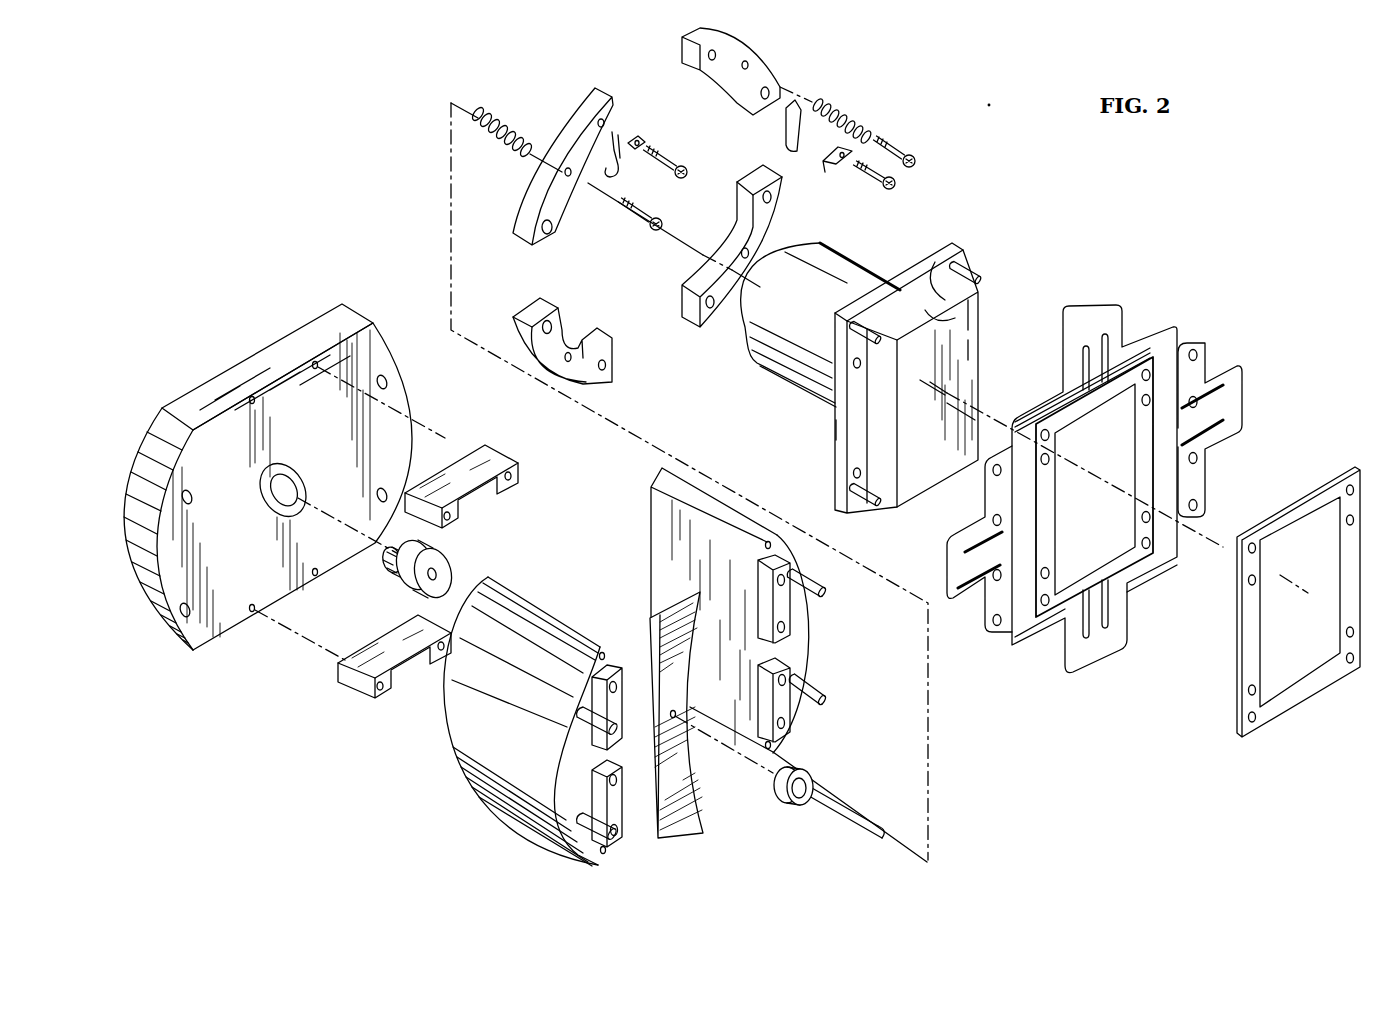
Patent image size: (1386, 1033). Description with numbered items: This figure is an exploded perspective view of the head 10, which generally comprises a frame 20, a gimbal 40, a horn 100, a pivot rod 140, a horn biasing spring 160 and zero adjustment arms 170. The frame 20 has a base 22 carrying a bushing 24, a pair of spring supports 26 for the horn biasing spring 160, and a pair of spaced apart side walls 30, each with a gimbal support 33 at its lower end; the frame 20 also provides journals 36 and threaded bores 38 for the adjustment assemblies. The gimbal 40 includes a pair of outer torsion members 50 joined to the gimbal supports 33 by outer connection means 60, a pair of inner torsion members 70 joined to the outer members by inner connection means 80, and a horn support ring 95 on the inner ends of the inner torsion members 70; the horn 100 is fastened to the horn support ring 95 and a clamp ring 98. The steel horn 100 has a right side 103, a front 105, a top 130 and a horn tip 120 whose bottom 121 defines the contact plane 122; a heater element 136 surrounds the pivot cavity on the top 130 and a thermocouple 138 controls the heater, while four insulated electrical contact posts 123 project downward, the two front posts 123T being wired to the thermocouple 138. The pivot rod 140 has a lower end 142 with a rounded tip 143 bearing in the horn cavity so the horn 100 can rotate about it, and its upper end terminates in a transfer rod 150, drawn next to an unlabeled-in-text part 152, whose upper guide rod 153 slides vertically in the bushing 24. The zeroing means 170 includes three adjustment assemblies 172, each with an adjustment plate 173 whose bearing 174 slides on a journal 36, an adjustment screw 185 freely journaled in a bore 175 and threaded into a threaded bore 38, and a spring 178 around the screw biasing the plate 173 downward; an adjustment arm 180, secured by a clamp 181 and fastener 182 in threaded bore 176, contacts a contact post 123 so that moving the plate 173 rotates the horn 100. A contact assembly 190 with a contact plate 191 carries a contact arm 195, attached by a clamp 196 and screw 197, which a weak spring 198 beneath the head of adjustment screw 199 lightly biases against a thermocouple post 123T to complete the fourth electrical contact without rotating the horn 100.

The head 10 is at (258, 302).
The frame 20 is at (428, 800).
The base 22 is at (253, 364).
The bushing 24 is at (300, 470).
The spring supports 26 is at (472, 448).
The side walls 30 is at (522, 807).
The gimbal support 33 is at (628, 700).
The journal 36 is at (572, 720).
The threaded bore 38 is at (603, 652).
The gimbal 40 is at (1027, 682).
The outer torsion members 50 is at (1222, 388).
The outer connection means 60 is at (1242, 410).
The inner torsion members 70 is at (1127, 330).
The inner connection means 80 is at (1097, 320).
The horn support ring 95 is at (1045, 543).
The clamp ring 98 is at (1248, 653).
The horn 100 is at (989, 218).
The right side 103 is at (845, 426).
The front 105 is at (928, 290).
The horn tip 120 is at (876, 447).
The bottom 121 is at (970, 353).
The contact plane 122 is at (968, 320).
The electrical contact posts 123 is at (865, 507).
The front posts 123T is at (978, 268).
The top 130 is at (840, 238).
The heater element 136 is at (850, 263).
The thermocouple 138 is at (933, 280).
The pivot rod 140 is at (826, 817).
The lower end 142 is at (870, 836).
The tip 143 is at (880, 832).
The transfer rod 150 is at (372, 562).
The knob 152 is at (432, 545).
The upper guide rod 153 is at (397, 572).
The horn biasing spring 160 is at (698, 818).
The zero adjustment arms 170 is at (578, 88).
The adjustment assembly 172 is at (593, 80).
The adjustment plate 173 is at (572, 110).
The bearing 174 is at (556, 233).
The bore 175 is at (568, 178).
The threaded bore 176 is at (612, 116).
The spring 178 is at (507, 113).
The adjustment arm 180 is at (623, 172).
The clamp 181 is at (646, 138).
The fastener 182 is at (678, 158).
The adjustment screw 185 is at (643, 222).
The contact assembly 190 is at (778, 58).
The contact plate 191 is at (728, 36).
The contact arm 195 is at (793, 120).
The clamp 196 is at (843, 165).
The screw 197 is at (870, 182).
The weak spring 198 is at (852, 118).
The adjustment screw 199 is at (896, 141).